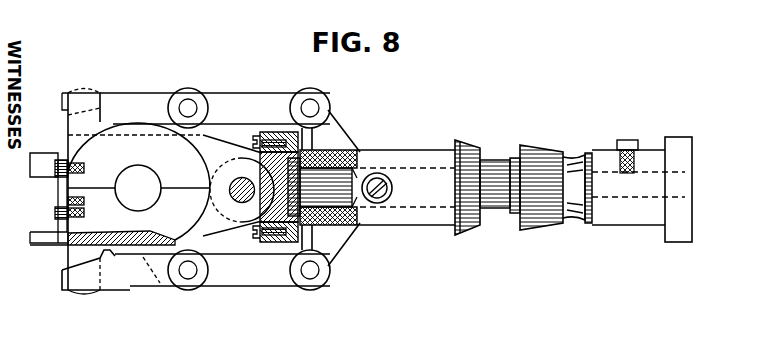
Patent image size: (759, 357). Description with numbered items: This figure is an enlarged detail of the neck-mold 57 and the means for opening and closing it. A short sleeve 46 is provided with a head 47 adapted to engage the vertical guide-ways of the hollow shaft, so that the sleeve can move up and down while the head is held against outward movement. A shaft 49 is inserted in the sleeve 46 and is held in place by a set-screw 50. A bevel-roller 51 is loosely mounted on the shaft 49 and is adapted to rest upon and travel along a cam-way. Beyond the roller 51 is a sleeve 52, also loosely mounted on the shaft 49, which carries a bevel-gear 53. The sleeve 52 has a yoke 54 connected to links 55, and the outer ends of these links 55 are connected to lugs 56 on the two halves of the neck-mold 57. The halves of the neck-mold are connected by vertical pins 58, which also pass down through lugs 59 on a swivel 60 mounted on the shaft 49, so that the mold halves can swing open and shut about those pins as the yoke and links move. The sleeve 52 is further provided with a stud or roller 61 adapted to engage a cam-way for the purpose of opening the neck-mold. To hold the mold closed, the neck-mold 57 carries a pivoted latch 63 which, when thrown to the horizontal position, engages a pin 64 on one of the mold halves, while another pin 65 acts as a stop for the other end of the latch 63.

The short sleeve 46 is at (633, 216).
The head 47 is at (686, 153).
The shaft 49 is at (492, 176).
The set-screw 50 is at (628, 147).
The bevel-roller 51 is at (551, 187).
The sleeve 52 is at (406, 187).
The bevel-gear 53 is at (467, 148).
The yoke 54 is at (333, 134).
The link 55 is at (215, 189).
The lug 56 is at (162, 105).
The neck-mold 57 is at (120, 184).
The vertical pin 58 is at (238, 177).
The lug 59 is at (214, 168).
The swivel 60 is at (262, 220).
The stud or roller 61 is at (380, 178).
The latch 63 is at (58, 188).
The pin 64 is at (72, 170).
The pin 65 is at (58, 214).